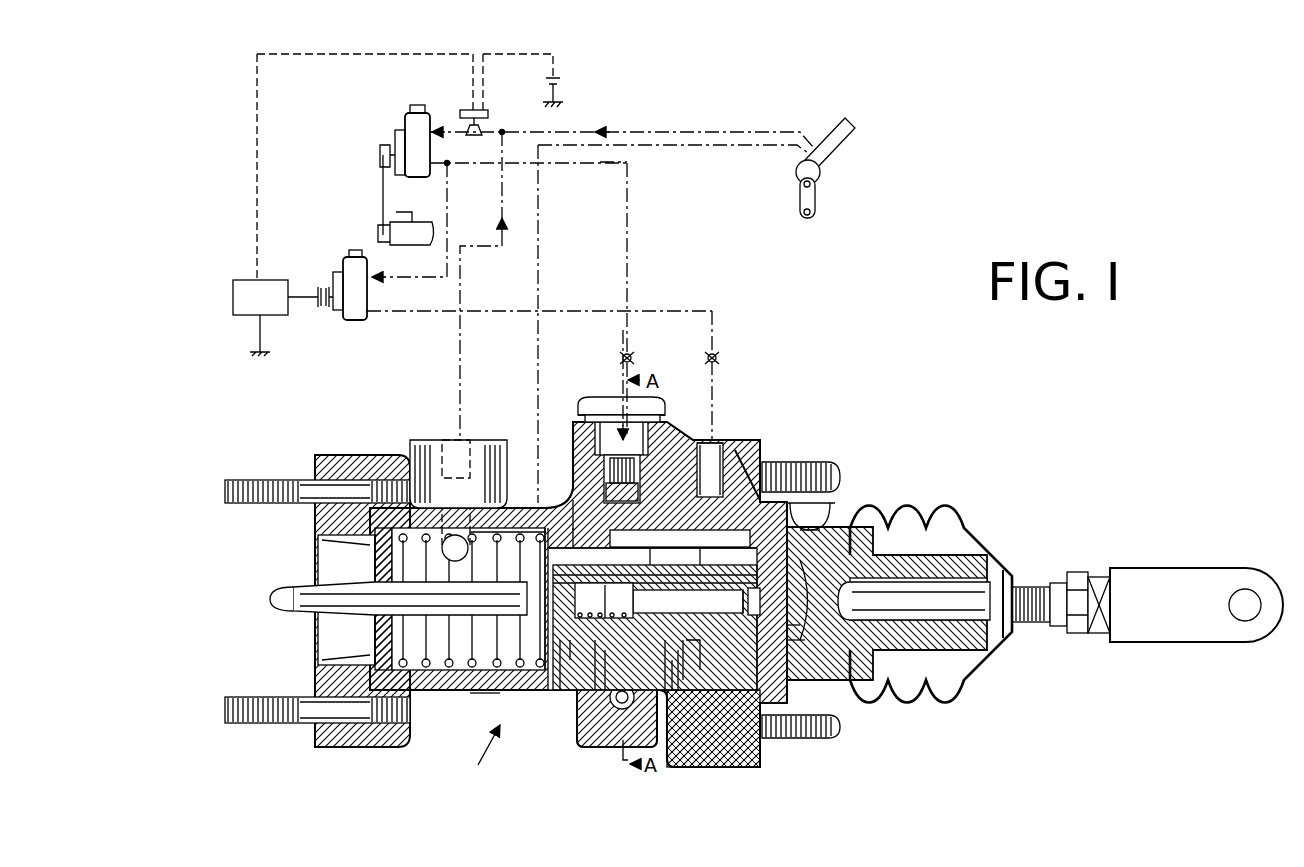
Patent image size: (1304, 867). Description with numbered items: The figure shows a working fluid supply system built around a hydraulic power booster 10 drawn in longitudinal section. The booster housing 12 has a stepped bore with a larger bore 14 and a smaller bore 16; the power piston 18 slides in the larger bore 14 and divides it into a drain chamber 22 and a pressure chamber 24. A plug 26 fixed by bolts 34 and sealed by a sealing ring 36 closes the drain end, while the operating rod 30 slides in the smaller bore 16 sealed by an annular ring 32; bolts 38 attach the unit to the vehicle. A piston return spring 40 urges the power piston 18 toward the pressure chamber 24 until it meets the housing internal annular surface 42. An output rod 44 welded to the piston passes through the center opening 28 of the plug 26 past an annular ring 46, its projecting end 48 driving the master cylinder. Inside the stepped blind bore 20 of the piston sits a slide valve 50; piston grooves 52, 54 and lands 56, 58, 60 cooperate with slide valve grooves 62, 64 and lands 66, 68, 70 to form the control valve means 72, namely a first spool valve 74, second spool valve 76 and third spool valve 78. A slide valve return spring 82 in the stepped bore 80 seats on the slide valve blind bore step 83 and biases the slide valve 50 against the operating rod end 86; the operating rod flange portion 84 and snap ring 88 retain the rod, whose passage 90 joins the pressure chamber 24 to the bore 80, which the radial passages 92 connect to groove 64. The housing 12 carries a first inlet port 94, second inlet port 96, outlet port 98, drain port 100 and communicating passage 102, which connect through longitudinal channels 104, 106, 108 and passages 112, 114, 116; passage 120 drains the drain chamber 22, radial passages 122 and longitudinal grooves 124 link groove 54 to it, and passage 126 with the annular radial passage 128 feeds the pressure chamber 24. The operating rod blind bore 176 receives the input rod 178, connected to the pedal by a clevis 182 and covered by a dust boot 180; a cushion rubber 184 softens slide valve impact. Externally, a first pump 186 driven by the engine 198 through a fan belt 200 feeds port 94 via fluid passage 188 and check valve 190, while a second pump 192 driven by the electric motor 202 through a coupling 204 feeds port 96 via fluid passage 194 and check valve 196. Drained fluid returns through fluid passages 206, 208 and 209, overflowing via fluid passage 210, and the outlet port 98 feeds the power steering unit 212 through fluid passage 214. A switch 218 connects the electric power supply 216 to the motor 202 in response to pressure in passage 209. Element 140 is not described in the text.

The hydraulic power booster 10 is at (494, 794).
The booster housing 12 is at (441, 694).
The larger bore section 14 is at (480, 696).
The smaller bore section 16 is at (805, 571).
The power piston 18 is at (528, 670).
The stepped blind bore 20 is at (562, 530).
The drain chamber 22 is at (433, 640).
The pressure chamber 24 is at (842, 727).
The plug 26 is at (316, 680).
The center opening 28 is at (372, 580).
The operating rod 30 is at (968, 668).
The annular ring 32 is at (878, 652).
The bolts 34 is at (300, 724).
The sealing ring 36 is at (348, 664).
The bolts 38 is at (842, 476).
The piston return spring 40 is at (446, 664).
The housing internal annular surface 42 is at (802, 644).
The output rod 44 is at (376, 548).
The annular ring 46 is at (372, 620).
The projecting end 48 is at (272, 598).
The slide valve 50 is at (562, 672).
The annular groove 52 is at (688, 674).
The annular groove 54 is at (716, 766).
The land 56 is at (667, 720).
The land 58 is at (688, 609).
The land 60 is at (763, 745).
The annular groove 62 is at (606, 705).
The annular groove 64 is at (765, 456).
The land 66 is at (600, 540).
The land 68 is at (684, 684).
The land 70 is at (765, 770).
The control valve means 72 is at (679, 700).
The first spool valve 74 is at (656, 562).
The second spool valve 76 is at (706, 560).
The third spool valve 78 is at (702, 575).
The stepped bore 80 is at (669, 578).
The slide valve return spring 82 is at (572, 662).
The slide valve blind bore step 83 is at (604, 600).
The operating rod flange portion 84 is at (785, 686).
The operating rod end 86 is at (790, 626).
The snap ring 88 is at (784, 606).
The passage 90 is at (792, 600).
The radial passages 92 is at (686, 610).
The first inlet port 94 is at (608, 416).
The second inlet port 96 is at (713, 442).
The outlet port 98 is at (618, 601).
The drain port 100 is at (453, 448).
The communicating passage 102 is at (620, 712).
The longitudinal channel 104 is at (576, 490).
The longitudinal channel 106 is at (792, 532).
The longitudinal channel 108 is at (745, 768).
The passage 112 is at (642, 500).
The passage 114 is at (598, 685).
The passage 116 is at (674, 715).
The passage 120 is at (463, 538).
The radial passages 122 is at (770, 540).
The longitudinal grooves 124 is at (512, 535).
The passage 126 is at (738, 450).
The annular radial passage 128 is at (802, 545).
The cap 140 is at (586, 396).
The blind bore 176 is at (962, 582).
The input rod 178 is at (1002, 580).
The dust boot 180 is at (962, 524).
The clevis 182 is at (1147, 567).
The cushion rubber 184 is at (549, 540).
The first pump 186 is at (405, 126).
The fluid passage 188 is at (629, 220).
The check valve 190 is at (631, 354).
The second pump 192 is at (350, 321).
The fluid passage 194 is at (710, 310).
The check valve 196 is at (715, 354).
The engine 198 is at (416, 222).
The fan belt 200 is at (383, 192).
The electric motor 202 is at (245, 279).
The coupling 204 is at (319, 286).
The fluid passage 206 is at (505, 226).
The fluid passage 208 is at (720, 131).
The fluid passage 209 is at (502, 135).
The fluid passage 210 is at (450, 217).
The power steering unit 212 is at (800, 180).
The fluid passage 214 is at (541, 227).
The electric power supply 216 is at (568, 78).
The switch 218 is at (490, 112).